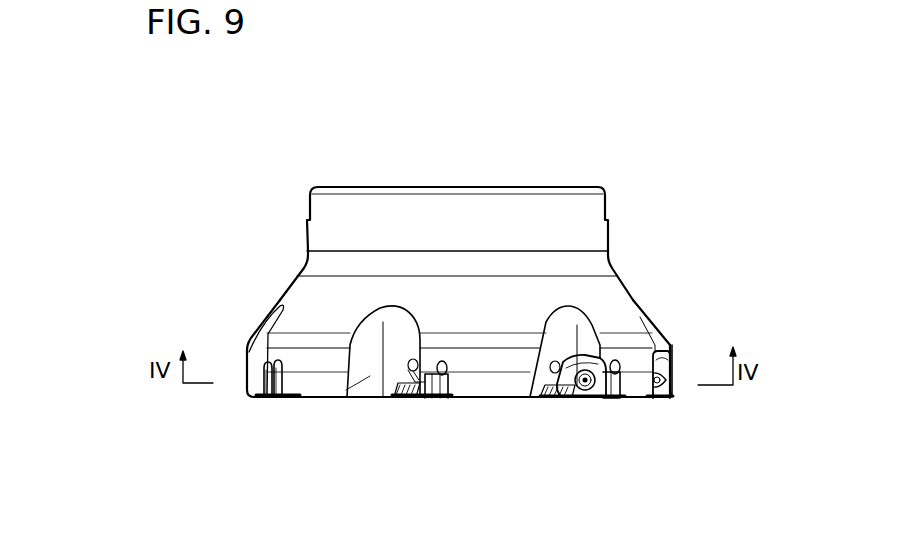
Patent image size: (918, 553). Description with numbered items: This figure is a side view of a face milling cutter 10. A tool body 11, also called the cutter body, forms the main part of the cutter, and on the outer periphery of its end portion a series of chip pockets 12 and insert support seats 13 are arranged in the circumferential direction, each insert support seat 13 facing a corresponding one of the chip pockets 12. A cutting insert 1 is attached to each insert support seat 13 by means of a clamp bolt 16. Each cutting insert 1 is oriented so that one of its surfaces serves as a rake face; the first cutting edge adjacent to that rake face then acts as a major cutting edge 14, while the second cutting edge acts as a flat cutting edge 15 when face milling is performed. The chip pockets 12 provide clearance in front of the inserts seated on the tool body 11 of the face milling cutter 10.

The face milling cutter 10 is at (459, 182).
The tool body 11 is at (587, 231).
The chip pocket 12 is at (604, 330).
The insert support seat 13 is at (437, 400).
The major cutting edge 14 is at (673, 393).
The flat cutting edge 15 is at (665, 401).
The clamp bolt 16 is at (545, 397).
The cutting insert 1 is at (582, 403).